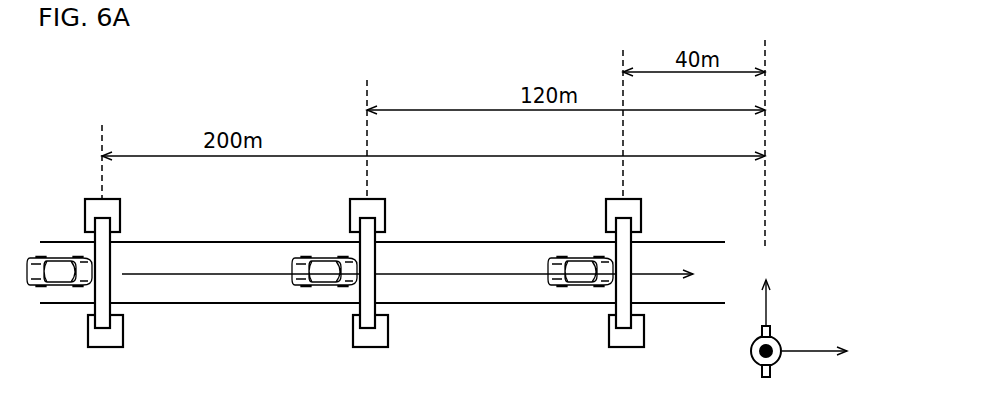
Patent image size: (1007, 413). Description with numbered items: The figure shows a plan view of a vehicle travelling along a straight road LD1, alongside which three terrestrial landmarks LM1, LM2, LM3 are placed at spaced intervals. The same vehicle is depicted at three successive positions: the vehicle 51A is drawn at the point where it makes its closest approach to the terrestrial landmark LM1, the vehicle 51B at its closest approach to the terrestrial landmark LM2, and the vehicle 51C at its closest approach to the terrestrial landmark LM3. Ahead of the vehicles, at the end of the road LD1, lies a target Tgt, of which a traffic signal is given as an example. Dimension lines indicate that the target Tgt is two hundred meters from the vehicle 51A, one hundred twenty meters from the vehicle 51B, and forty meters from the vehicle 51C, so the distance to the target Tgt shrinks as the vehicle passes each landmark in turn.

The straight road LD1 is at (55, 241).
The terrestrial landmark LM1 is at (120, 213).
The terrestrial landmark LM2 is at (385, 213).
The terrestrial landmark LM3 is at (641, 213).
The vehicle 51A is at (58, 286).
The vehicle 51B is at (322, 286).
The vehicle 51C is at (578, 286).
The target Tgt is at (762, 370).